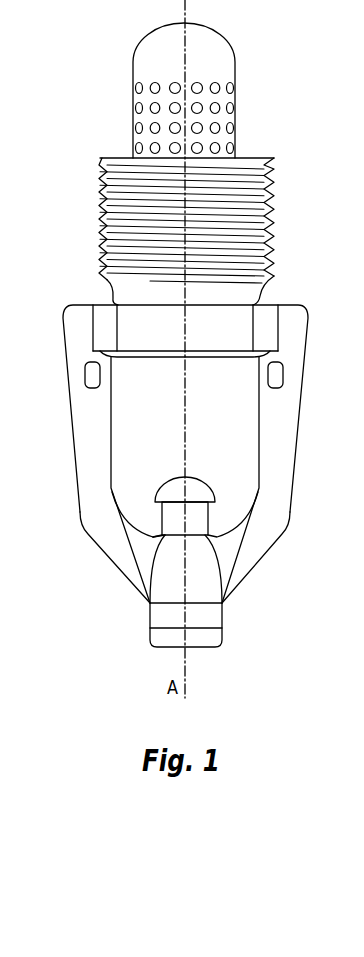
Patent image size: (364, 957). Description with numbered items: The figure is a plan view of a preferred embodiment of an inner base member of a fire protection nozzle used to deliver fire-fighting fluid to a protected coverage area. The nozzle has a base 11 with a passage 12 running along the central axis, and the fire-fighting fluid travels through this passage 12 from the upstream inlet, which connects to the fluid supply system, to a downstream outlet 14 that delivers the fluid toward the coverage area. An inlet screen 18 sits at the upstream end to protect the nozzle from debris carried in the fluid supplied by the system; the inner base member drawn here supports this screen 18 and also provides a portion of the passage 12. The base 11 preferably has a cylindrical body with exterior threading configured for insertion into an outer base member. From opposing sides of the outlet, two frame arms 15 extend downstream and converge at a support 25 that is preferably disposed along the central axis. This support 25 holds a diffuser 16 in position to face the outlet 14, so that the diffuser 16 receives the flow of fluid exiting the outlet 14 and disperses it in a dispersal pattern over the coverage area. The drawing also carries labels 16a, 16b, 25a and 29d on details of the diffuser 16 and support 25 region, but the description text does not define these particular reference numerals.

The base 11 is at (80, 318).
The passage 12 is at (224, 387).
The downstream outlet 14 is at (146, 386).
The arms 15 is at (87, 472).
The diffuser 16 is at (210, 505).
The plug head 16a is at (190, 476).
The plug shaft 16b is at (162, 518).
The inlet screen 18 is at (225, 57).
The support 25 is at (222, 603).
The bulb tip 25a is at (160, 535).
The support member 29d is at (215, 532).